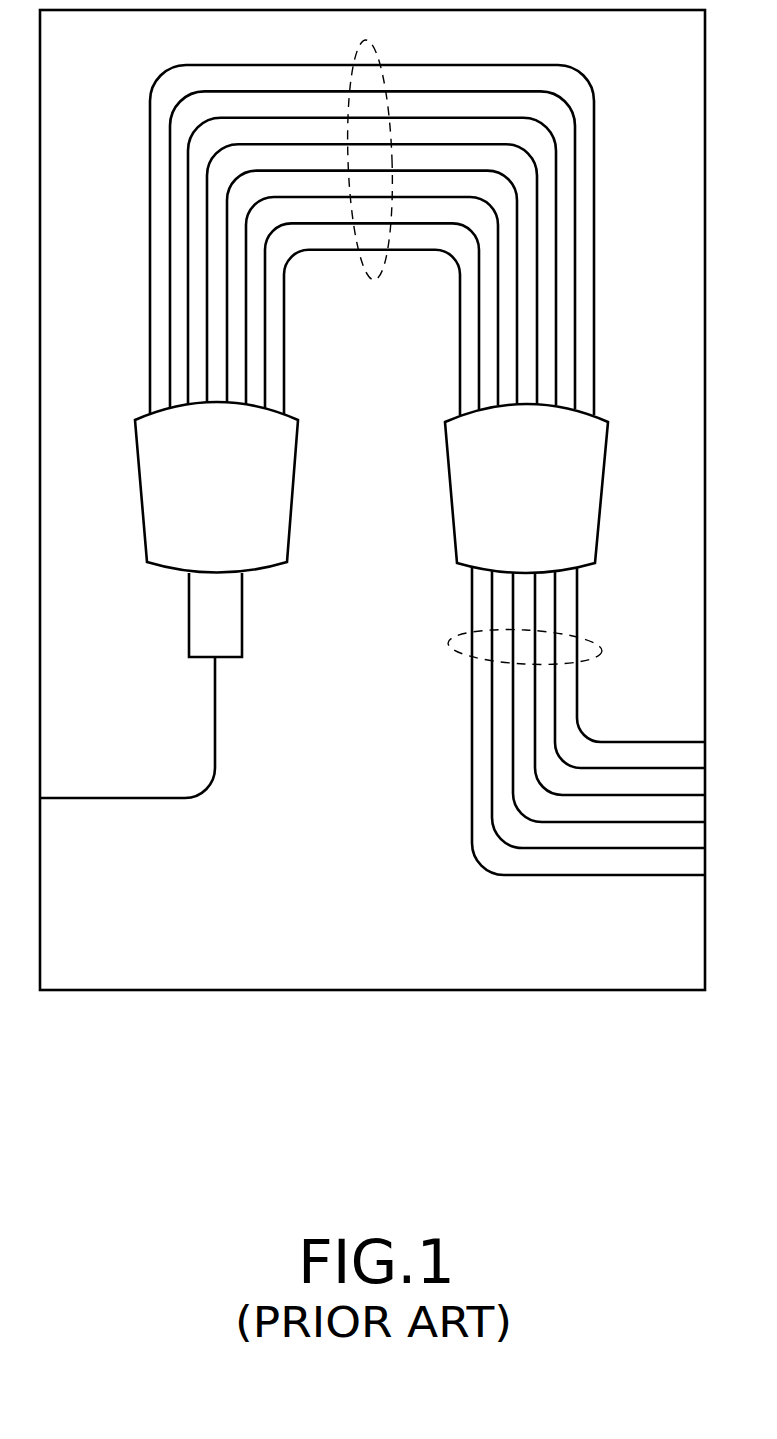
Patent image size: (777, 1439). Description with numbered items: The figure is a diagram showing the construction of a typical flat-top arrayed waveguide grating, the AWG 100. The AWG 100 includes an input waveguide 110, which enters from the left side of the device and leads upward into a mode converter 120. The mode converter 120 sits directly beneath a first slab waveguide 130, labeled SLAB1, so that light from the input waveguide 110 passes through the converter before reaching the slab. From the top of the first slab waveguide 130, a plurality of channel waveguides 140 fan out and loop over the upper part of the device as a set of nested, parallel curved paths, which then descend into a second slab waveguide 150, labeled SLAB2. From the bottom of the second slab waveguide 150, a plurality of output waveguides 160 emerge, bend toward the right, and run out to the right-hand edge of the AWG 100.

The AWG 100 is at (387, 1098).
The input waveguide 110 is at (110, 800).
The mode converter 120 is at (189, 615).
The first slab waveguide 130 is at (139, 492).
The channel waveguides 140 is at (370, 281).
The second slab waveguide 150 is at (606, 492).
The output waveguides 160 is at (603, 645).